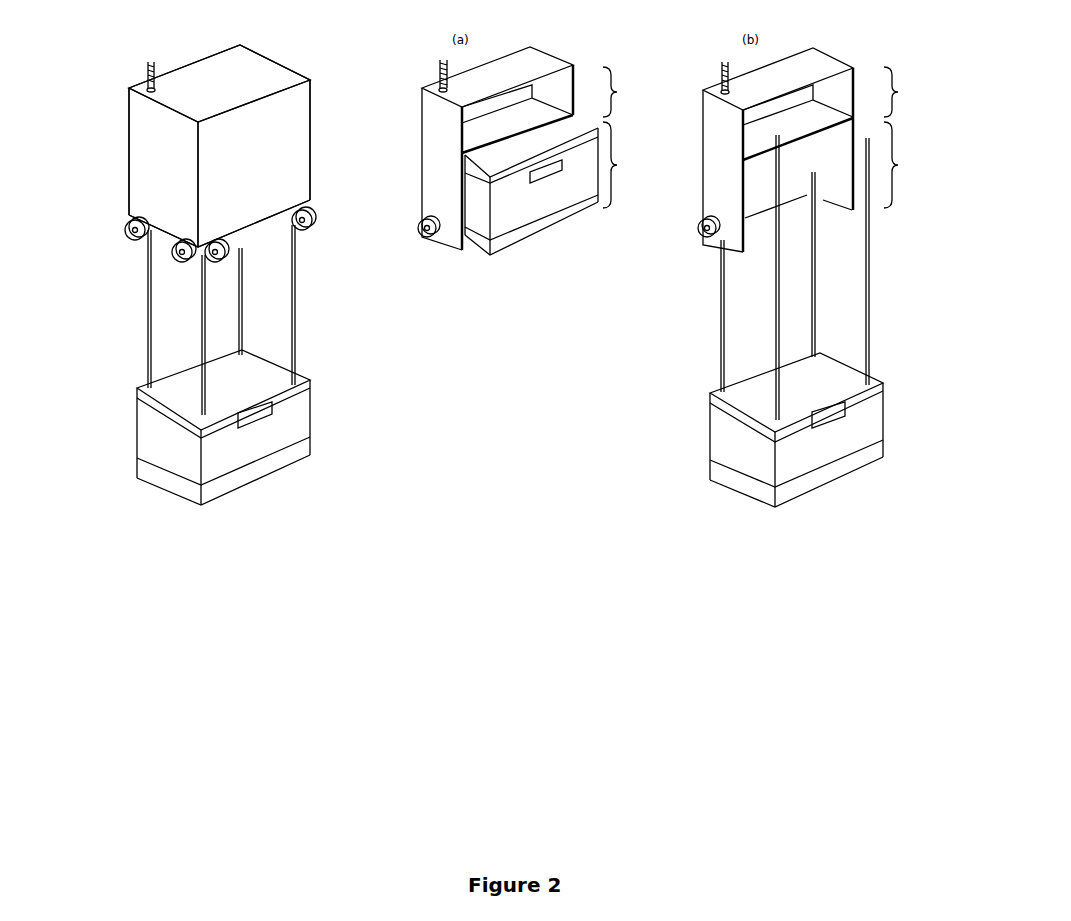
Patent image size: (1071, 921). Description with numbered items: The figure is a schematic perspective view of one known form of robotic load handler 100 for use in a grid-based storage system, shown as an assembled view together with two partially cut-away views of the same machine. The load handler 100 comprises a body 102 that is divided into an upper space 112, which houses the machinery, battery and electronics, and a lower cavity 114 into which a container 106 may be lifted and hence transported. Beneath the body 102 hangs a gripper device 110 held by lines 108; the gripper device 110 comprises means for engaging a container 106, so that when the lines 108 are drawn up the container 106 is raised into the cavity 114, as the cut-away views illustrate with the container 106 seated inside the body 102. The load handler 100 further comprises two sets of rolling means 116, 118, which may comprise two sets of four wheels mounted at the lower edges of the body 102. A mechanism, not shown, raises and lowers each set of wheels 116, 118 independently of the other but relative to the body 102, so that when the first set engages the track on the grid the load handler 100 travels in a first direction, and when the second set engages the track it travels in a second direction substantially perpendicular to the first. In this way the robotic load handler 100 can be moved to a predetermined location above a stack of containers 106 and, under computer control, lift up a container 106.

The load handler 100 is at (205, 76).
The body 102 is at (278, 148).
The container 106 is at (288, 440).
The lines 108 is at (148, 325).
The gripper device 110 is at (172, 411).
The space for machinery, battery and electronics 112 is at (777, 92).
The cavity 114 is at (777, 165).
The rolling means 116 is at (310, 222).
The rolling means 118 is at (130, 220).